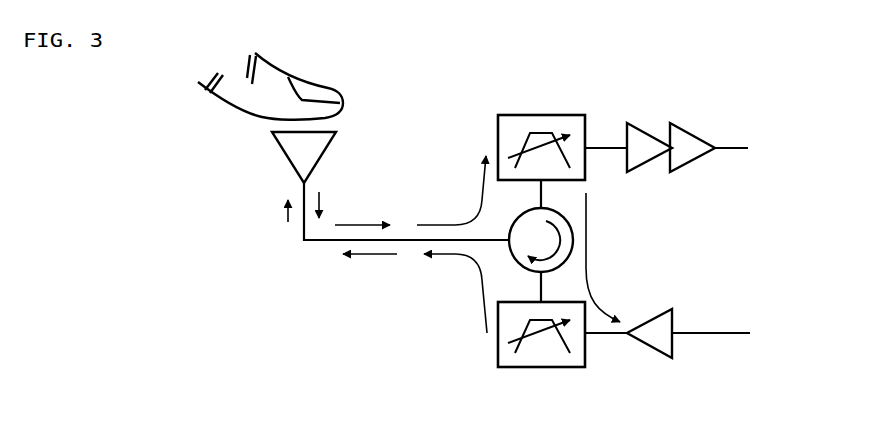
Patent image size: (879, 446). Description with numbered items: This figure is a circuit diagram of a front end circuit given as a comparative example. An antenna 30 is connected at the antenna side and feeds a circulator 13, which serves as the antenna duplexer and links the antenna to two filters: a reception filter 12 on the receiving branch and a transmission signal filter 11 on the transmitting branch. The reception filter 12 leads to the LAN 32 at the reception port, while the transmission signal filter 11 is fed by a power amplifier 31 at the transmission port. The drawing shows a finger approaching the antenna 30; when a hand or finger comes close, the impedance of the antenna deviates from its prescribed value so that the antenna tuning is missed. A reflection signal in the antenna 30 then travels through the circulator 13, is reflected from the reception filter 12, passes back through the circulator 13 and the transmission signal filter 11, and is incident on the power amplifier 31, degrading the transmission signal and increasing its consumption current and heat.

The antenna 30 is at (289, 159).
The reception filter 12 is at (541, 115).
The transmission signal filter 11 is at (541, 367).
The circulator 13 is at (568, 222).
The LAN 32 is at (684, 127).
The power amplifier 31 is at (652, 352).